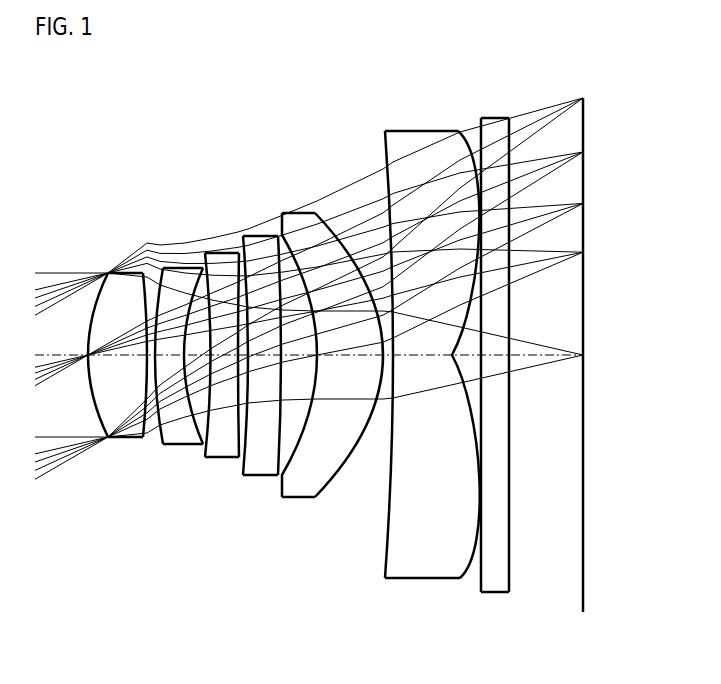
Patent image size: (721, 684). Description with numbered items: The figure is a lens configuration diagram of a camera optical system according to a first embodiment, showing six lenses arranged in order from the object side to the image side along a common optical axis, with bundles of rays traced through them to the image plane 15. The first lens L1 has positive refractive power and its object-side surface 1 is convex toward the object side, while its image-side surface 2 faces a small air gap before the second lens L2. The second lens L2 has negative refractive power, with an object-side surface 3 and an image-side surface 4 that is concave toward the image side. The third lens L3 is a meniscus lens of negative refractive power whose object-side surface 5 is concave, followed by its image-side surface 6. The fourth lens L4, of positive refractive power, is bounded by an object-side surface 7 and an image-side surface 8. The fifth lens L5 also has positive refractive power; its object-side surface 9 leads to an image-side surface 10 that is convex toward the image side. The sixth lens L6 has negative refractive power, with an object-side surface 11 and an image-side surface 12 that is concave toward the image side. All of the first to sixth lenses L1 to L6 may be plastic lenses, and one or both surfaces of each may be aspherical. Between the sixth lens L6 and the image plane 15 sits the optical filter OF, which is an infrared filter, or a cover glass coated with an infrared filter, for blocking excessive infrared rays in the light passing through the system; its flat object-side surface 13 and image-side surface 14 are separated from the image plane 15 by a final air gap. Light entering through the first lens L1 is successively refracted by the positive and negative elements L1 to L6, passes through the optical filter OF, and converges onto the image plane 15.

The object-side surface of first lens 1 is at (89, 337).
The image-side surface of first lens 2 is at (152, 281).
The object-side surface of second lens 3 is at (158, 407).
The image-side surface of second lens 4 is at (153, 287).
The object-side surface of third lens 5 is at (203, 440).
The image-side surface of third lens 6 is at (240, 253).
The object-side surface of fourth lens 7 is at (238, 457).
The image-side surface of fourth lens 8 is at (283, 247).
The object-side surface of fifth lens 9 is at (288, 467).
The image-side surface of fifth lens 10 is at (335, 227).
The object-side surface of sixth lens 11 is at (385, 535).
The image-side surface of sixth lens 12 is at (477, 143).
The object-side surface of optical filter 13 is at (483, 400).
The image-side surface of optical filter 14 is at (512, 320).
The image plane 15 is at (584, 520).
The first lens L1 is at (90, 358).
The second lens L2 is at (153, 376).
The third lens L3 is at (200, 373).
The fourth lens L4 is at (244, 374).
The fifth lens L5 is at (318, 379).
The sixth lens L6 is at (399, 362).
The optical filter OF is at (567, 394).